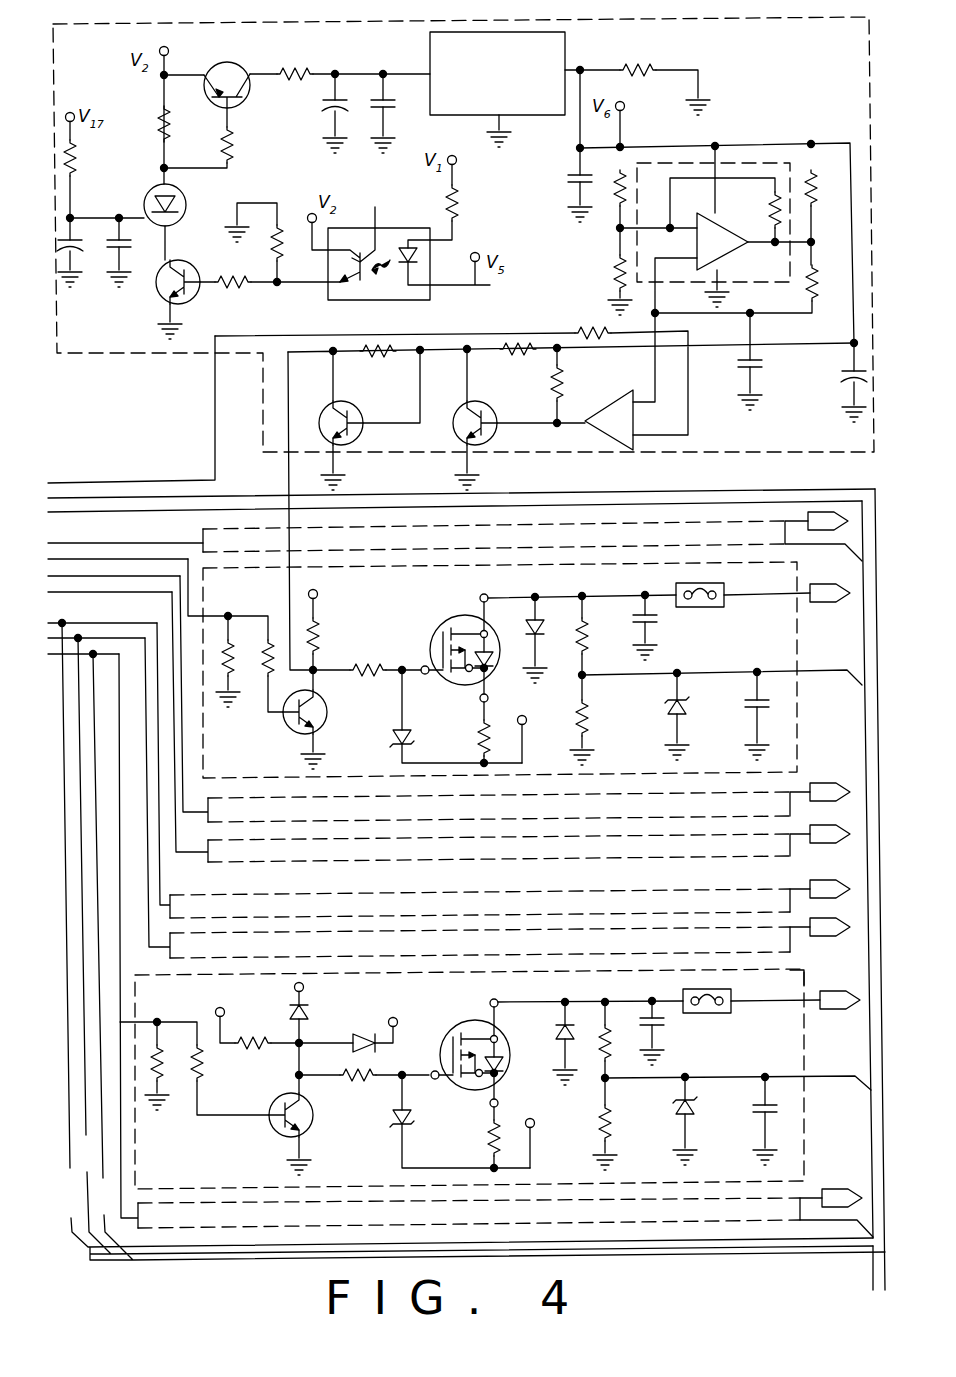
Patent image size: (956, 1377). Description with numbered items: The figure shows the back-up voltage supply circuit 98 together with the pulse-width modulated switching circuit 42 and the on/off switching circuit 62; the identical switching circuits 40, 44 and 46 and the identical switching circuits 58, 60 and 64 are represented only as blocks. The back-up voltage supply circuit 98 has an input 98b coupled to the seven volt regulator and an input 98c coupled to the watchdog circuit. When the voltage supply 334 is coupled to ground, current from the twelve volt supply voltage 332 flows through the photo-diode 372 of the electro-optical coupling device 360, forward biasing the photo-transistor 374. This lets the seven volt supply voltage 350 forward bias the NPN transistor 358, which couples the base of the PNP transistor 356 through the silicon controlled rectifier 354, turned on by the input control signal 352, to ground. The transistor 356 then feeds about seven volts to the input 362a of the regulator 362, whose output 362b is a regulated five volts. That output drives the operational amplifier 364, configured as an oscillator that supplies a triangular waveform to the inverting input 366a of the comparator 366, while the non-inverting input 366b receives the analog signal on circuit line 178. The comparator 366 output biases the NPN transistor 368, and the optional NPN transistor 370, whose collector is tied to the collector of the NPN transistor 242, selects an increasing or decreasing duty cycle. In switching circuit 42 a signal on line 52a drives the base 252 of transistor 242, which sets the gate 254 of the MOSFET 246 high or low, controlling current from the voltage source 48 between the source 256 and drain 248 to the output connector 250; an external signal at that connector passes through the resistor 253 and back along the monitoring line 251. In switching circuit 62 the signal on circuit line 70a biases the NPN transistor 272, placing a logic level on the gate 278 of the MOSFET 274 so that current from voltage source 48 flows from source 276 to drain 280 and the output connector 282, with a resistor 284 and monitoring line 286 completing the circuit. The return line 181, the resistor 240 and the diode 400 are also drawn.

The back-up voltage supply circuit 98 is at (160, 353).
The input 98b is at (340, 68).
The input 98c is at (484, 286).
The 7.0 volt supply voltage 350 is at (168, 49).
The input control signal 352 is at (73, 122).
The silicon controlled rectifier 354 is at (146, 193).
The PNP transistor 356 is at (240, 100).
The NPN transistor 358 is at (195, 292).
The electro-optical coupling device 360 is at (422, 304).
The 5.0 volt regulator 362 is at (430, 50).
The input 362a is at (430, 80).
The output 362b is at (582, 70).
The operational amplifier 364 is at (745, 160).
The comparator 366 is at (584, 426).
The inverting input 366a is at (641, 386).
The non-inverting input 366b is at (636, 452).
The NPN transistor 368 is at (481, 401).
The NPN transistor 370 is at (366, 411).
The photo-diode 372 is at (401, 244).
The photo-transistor 374 is at (345, 285).
The +12 volt supply voltage 332 is at (458, 161).
The voltage supply 334 is at (480, 254).
The circuit line 178 is at (113, 480).
The return line 181 is at (866, 744).
The line 52a is at (126, 556).
The circuit line 70a is at (86, 650).
The switching circuit 40 is at (218, 529).
The switching circuit 42 is at (800, 656).
The switching circuit 44 is at (276, 797).
The switching circuit 46 is at (236, 846).
The switching circuit 58 is at (362, 888).
The switching circuit 60 is at (497, 808).
The switching circuit 62 is at (808, 1162).
The switching circuit 64 is at (800, 1198).
The resistor 240 is at (318, 600).
The NPN transistor 242 is at (330, 722).
The MOSFET 246 is at (432, 636).
The drain 248 is at (481, 598).
The output connector 250 is at (829, 588).
The monitoring line 251 is at (722, 671).
The base 252 is at (283, 716).
The resistor 253 is at (585, 655).
The gate 254 is at (434, 675).
The source 256 is at (464, 688).
The voltage source 48 is at (528, 718).
The NPN transistor 272 is at (272, 1128).
The MOSFET 274 is at (448, 1022).
The source 276 is at (458, 1090).
The gate 278 is at (431, 1073).
The drain 280 is at (497, 1032).
The output connector 282 is at (834, 1004).
The resistor 284 is at (608, 1058).
The monitoring line 286 is at (735, 1076).
The diode 400 is at (365, 1040).